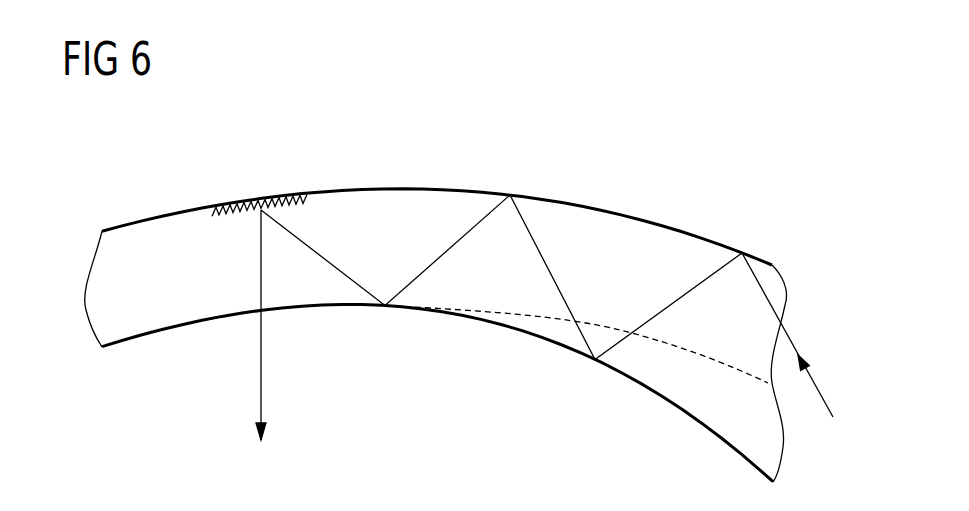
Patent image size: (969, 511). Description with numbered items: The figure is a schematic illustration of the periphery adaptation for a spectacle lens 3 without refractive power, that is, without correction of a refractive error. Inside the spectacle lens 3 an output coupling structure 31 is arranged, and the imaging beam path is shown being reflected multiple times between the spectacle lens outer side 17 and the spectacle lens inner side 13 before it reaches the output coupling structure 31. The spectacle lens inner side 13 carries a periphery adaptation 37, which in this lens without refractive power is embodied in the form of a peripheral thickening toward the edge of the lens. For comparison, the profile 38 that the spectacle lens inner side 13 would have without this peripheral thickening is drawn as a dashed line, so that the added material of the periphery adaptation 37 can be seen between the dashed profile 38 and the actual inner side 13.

The spectacle lens 3 is at (436, 285).
The spectacle lens inner side 13 is at (340, 307).
The spectacle lens outer side 17 is at (330, 190).
The output coupling structure 31 is at (236, 203).
The periphery adaptation 37 is at (575, 397).
The profile 38 is at (683, 348).